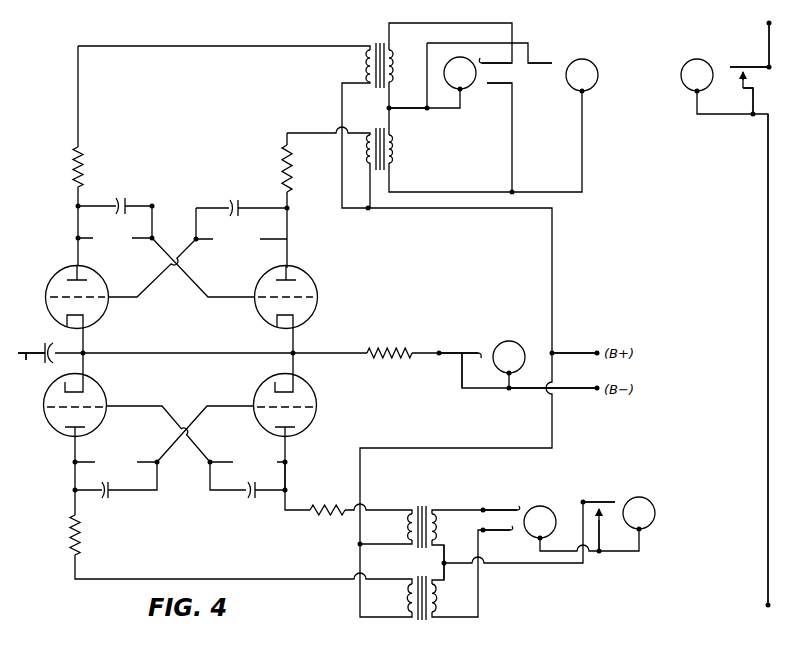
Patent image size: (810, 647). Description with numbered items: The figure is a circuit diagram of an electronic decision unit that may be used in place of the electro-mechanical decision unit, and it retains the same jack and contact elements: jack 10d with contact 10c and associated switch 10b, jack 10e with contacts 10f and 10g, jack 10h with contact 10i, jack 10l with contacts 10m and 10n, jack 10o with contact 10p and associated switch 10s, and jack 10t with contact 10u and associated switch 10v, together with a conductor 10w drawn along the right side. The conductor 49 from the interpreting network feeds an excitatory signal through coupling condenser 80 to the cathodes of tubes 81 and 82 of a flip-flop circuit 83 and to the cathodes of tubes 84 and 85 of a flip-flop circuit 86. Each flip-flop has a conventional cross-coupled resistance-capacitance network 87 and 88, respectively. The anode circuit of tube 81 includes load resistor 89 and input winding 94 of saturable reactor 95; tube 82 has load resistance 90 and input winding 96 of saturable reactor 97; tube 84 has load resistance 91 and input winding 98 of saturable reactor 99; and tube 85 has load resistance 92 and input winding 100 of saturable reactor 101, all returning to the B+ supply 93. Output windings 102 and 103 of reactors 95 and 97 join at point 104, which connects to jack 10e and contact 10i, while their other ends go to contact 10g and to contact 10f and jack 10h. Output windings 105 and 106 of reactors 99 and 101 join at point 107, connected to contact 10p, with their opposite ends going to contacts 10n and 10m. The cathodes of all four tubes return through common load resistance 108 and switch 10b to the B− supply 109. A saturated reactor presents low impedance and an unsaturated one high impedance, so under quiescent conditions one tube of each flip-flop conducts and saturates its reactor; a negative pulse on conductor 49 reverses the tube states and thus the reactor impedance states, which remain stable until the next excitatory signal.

The conductor 49 is at (29, 367).
The coupling condenser 80 is at (52, 344).
The tube 81 is at (104, 315).
The tube 82 is at (256, 318).
The flip-flop circuit 83 is at (181, 291).
The tube 84 is at (104, 397).
The tube 85 is at (258, 397).
The flip-flop circuit 86 is at (195, 405).
The cross-coupled resistance-capacitance network 87 is at (196, 206).
The cross-coupled resistance-capacitance network 88 is at (209, 493).
The load resistor 89 is at (83, 178).
The load resistor 90 is at (283, 178).
The load resistor 91 is at (79, 535).
The load resistor 92 is at (327, 515).
The B+ supply 93 is at (597, 351).
The input winding 94 is at (365, 70).
The saturable reactor 95 is at (379, 43).
The input winding 96 is at (366, 154).
The saturable reactor 97 is at (380, 173).
The input winding 98 is at (408, 598).
The saturable reactor 99 is at (422, 621).
The input winding 100 is at (408, 527).
The saturable reactor 101 is at (421, 505).
The output winding 102 is at (395, 59).
The output winding 103 is at (393, 150).
The point 104 is at (388, 108).
The output winding 105 is at (436, 608).
The output winding 106 is at (436, 538).
The point 107 is at (443, 563).
The common load resistance 108 is at (392, 350).
The B− supply 109 is at (597, 391).
The switch 10b is at (462, 361).
The contact 10c is at (478, 351).
The jack 10d is at (511, 343).
The jack 10e is at (455, 72).
The contact 10f is at (487, 86).
The contact 10g is at (483, 60).
The jack 10h is at (584, 64).
The contact 10i is at (552, 62).
The jack 10l is at (543, 512).
The contact 10m is at (516, 510).
The contact 10n is at (511, 532).
The jack 10o is at (658, 498).
The contact 10p is at (613, 506).
The switch 10s is at (601, 526).
The jack 10t is at (690, 62).
The contact 10u is at (732, 66).
The switch 10v is at (741, 80).
The conductor 10w is at (767, 247).